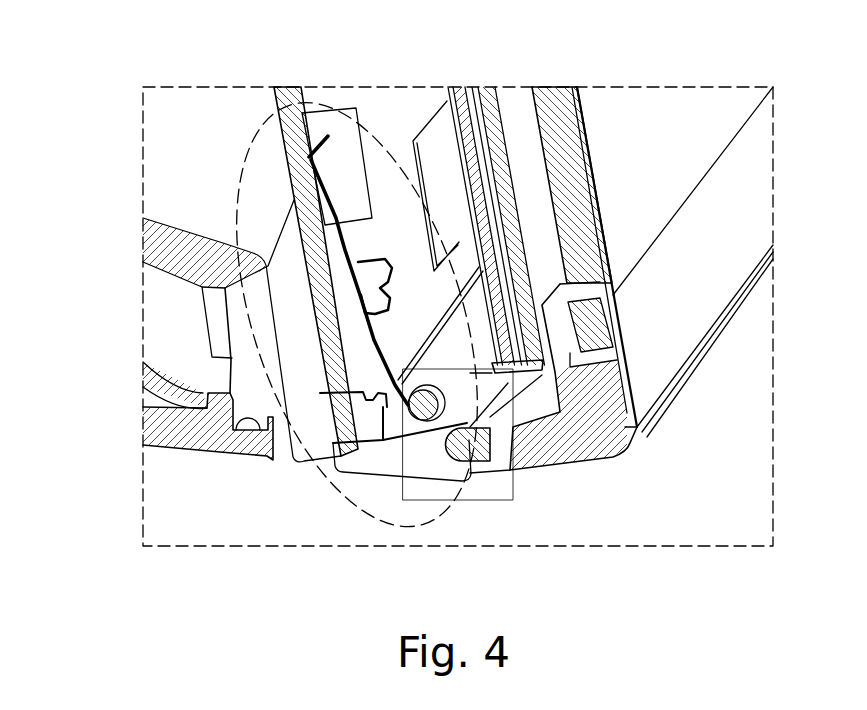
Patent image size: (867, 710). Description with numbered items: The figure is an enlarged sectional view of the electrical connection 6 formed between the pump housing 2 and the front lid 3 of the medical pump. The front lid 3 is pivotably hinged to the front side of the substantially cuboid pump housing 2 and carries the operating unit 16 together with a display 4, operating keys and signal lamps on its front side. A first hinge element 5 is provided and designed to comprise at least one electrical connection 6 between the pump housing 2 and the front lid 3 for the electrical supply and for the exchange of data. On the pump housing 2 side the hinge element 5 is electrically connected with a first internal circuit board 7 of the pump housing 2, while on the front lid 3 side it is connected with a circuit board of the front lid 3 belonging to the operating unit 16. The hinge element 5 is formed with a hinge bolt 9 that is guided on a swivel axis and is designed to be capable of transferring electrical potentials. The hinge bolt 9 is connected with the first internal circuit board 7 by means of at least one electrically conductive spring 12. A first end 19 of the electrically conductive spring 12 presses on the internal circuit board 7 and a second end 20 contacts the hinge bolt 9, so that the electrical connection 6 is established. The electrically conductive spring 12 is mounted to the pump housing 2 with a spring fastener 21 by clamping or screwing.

The pump housing 2 is at (139, 186).
The front lid 3 is at (642, 433).
The display 4 is at (690, 118).
The first hinge element 5 is at (477, 493).
The electrical connection 6 is at (246, 420).
The first internal circuit board 7 is at (320, 128).
The hinge bolt 9 is at (397, 418).
The electrically conductive spring 12 is at (347, 372).
The operating unit 16 is at (553, 118).
The first end 19 is at (307, 158).
The second end 20 is at (400, 410).
The spring fastener 21 is at (353, 290).